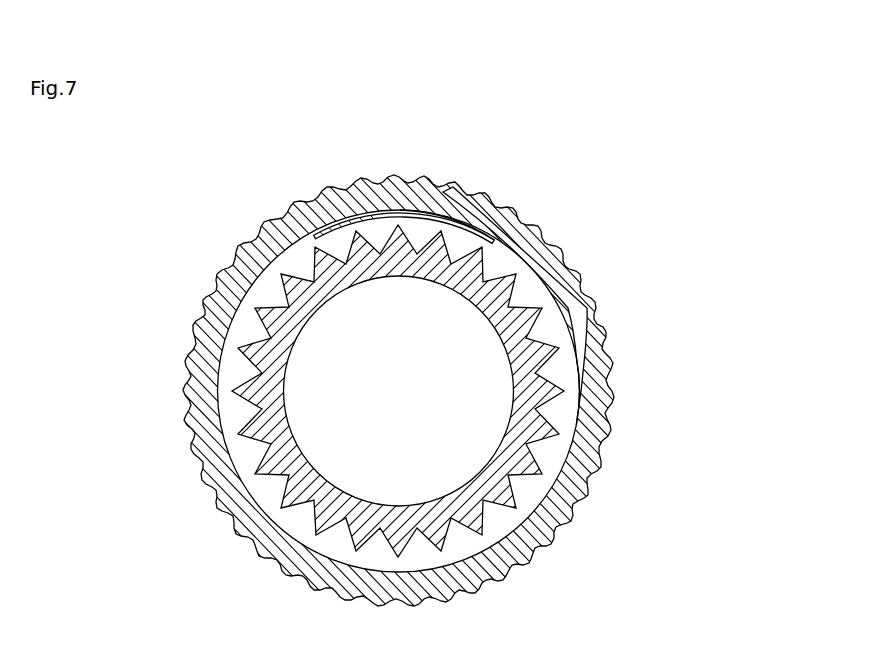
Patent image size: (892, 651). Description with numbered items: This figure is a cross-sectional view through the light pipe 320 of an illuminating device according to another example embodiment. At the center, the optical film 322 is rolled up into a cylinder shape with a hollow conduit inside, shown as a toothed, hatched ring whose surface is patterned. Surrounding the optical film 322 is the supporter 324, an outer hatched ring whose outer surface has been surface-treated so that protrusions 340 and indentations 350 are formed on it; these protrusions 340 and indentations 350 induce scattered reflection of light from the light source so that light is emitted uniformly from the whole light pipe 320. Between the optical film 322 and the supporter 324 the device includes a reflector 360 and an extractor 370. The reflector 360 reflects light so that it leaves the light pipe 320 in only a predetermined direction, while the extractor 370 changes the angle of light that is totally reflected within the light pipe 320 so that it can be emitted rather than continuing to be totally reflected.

The light pipe 320 is at (446, 390).
The optical film 322 is at (540, 340).
The supporter 324 is at (577, 325).
The protrusions 340 is at (555, 247).
The indentations 350 is at (537, 228).
The reflector 360 is at (399, 208).
The extractor 370 is at (425, 208).